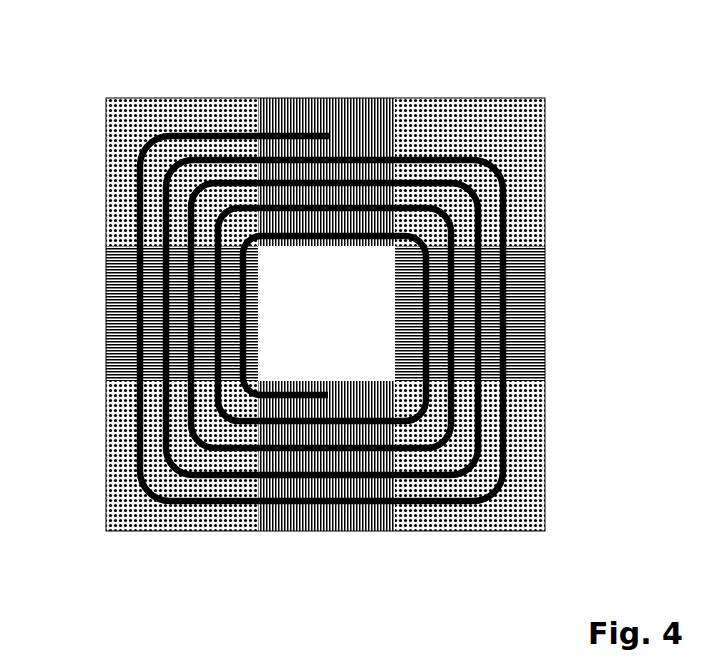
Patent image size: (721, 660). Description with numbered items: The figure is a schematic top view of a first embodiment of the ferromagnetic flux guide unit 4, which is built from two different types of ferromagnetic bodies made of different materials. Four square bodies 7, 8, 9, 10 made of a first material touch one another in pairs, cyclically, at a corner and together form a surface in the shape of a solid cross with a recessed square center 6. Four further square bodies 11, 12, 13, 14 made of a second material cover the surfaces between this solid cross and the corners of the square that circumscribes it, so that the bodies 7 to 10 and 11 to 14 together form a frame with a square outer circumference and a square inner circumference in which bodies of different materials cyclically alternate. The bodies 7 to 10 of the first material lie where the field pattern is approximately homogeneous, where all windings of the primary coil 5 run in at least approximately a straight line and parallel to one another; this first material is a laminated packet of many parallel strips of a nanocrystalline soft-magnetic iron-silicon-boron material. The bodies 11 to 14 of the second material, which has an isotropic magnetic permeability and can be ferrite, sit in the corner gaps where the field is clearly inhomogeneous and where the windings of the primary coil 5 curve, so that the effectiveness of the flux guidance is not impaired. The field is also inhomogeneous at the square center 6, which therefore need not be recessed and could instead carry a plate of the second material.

The flux guide unit 4 is at (567, 79).
The primary coil 5 is at (450, 147).
The recessed square center 6 is at (313, 316).
The square body 7 is at (323, 123).
The square body 8 is at (100, 325).
The square body 9 is at (318, 523).
The square body 10 is at (513, 314).
The square body 11 is at (513, 190).
The square body 12 is at (178, 124).
The square body 13 is at (100, 453).
The square body 14 is at (456, 523).